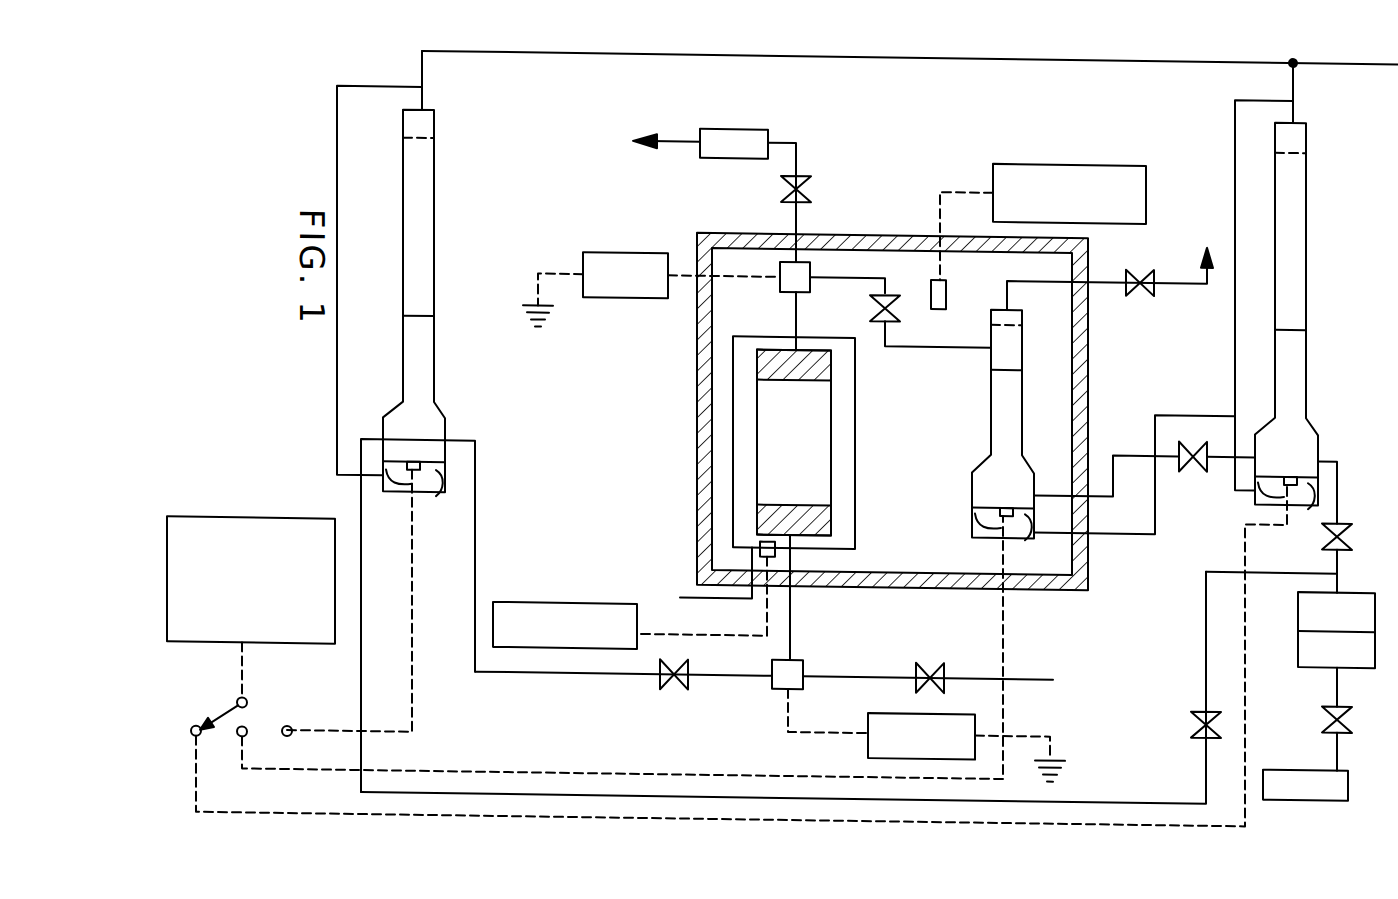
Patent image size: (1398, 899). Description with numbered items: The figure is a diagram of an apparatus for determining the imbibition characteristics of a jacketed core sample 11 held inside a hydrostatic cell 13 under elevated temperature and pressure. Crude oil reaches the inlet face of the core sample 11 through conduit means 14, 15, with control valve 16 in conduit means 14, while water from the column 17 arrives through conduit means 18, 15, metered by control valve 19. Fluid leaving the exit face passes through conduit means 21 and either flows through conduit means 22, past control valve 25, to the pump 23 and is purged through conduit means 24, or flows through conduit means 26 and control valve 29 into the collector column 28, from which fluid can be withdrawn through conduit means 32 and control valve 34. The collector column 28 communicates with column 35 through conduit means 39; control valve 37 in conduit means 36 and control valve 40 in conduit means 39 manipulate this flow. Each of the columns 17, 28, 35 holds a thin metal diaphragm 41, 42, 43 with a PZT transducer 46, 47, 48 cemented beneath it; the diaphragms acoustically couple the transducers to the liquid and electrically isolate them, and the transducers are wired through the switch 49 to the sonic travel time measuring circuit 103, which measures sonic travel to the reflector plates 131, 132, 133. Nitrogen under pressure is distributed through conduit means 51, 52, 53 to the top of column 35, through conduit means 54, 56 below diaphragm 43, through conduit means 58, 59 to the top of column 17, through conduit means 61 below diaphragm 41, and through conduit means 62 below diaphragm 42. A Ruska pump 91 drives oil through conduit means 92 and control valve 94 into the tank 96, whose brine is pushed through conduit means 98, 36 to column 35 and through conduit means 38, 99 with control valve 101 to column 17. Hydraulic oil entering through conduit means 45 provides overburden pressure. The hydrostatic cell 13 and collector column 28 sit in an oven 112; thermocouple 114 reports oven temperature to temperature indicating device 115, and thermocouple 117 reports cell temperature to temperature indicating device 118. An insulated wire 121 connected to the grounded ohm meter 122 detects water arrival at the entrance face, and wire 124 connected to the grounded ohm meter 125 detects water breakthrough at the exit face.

The jacketed core sample 11 is at (832, 456).
The hydrostatic cell 13 is at (856, 403).
The conduit means 14 is at (883, 662).
The conduit means 15 is at (792, 620).
The control valve 16 is at (930, 662).
The column 17 is at (436, 222).
The conduit means 18 is at (477, 458).
The control valve 19 is at (676, 680).
The conduit means 21 is at (796, 308).
The conduit means 22 is at (800, 133).
The pump 23 is at (732, 118).
The conduit means 24 is at (669, 128).
The control valve 25 is at (806, 180).
The conduit means 26 is at (843, 268).
The collector column 28 is at (989, 375).
The control valve 29 is at (878, 314).
The conduit means 32 is at (1192, 280).
The control valve 34 is at (1157, 280).
The column 35 is at (1308, 250).
The conduit means 36 is at (1338, 440).
The control valve 37 is at (1343, 518).
The conduit means 38 is at (1220, 553).
The conduit means 39 is at (1115, 456).
The control valve 40 is at (1172, 455).
The metal diaphragm 41 is at (440, 488).
The metal diaphragm 42 is at (1026, 522).
The metal diaphragm 43 is at (1313, 486).
The conduit means 45 is at (706, 590).
The PZT transducer 46 is at (360, 470).
The PZT transducer 47 is at (975, 500).
The PZT transducer 48 is at (1262, 471).
The switch 49 is at (258, 720).
The conduit means 51 is at (1385, 46).
The conduit means 52 is at (1292, 72).
The conduit means 53 is at (1295, 97).
The conduit means 54 is at (1233, 354).
The conduit means 56 is at (1232, 422).
The conduit means 58 is at (922, 48).
The conduit means 59 is at (424, 86).
The conduit means 61 is at (337, 148).
The conduit means 62 is at (1155, 412).
The Ruska pump 91 is at (1277, 752).
The conduit means 92 is at (1340, 739).
The control valve 94 is at (1345, 701).
The tank 96 is at (1298, 607).
The conduit means 98 is at (1340, 556).
The conduit means 99 is at (1206, 636).
The control valve 101 is at (1191, 708).
The sonic travel time measuring circuit 103 is at (207, 514).
The oven 112 is at (708, 223).
The thermocouple 114 is at (947, 269).
The temperature indicating device 115 is at (1062, 150).
The thermocouple 117 is at (760, 538).
The temperature indicating device 118 is at (565, 602).
The insulated wire 121 is at (770, 680).
The ohm meter 122 is at (868, 744).
The wire 124 is at (672, 262).
The ohm meter 125 is at (623, 244).
The reflector plate 131 is at (437, 132).
The reflector plate 132 is at (989, 311).
The reflector plate 133 is at (1308, 135).